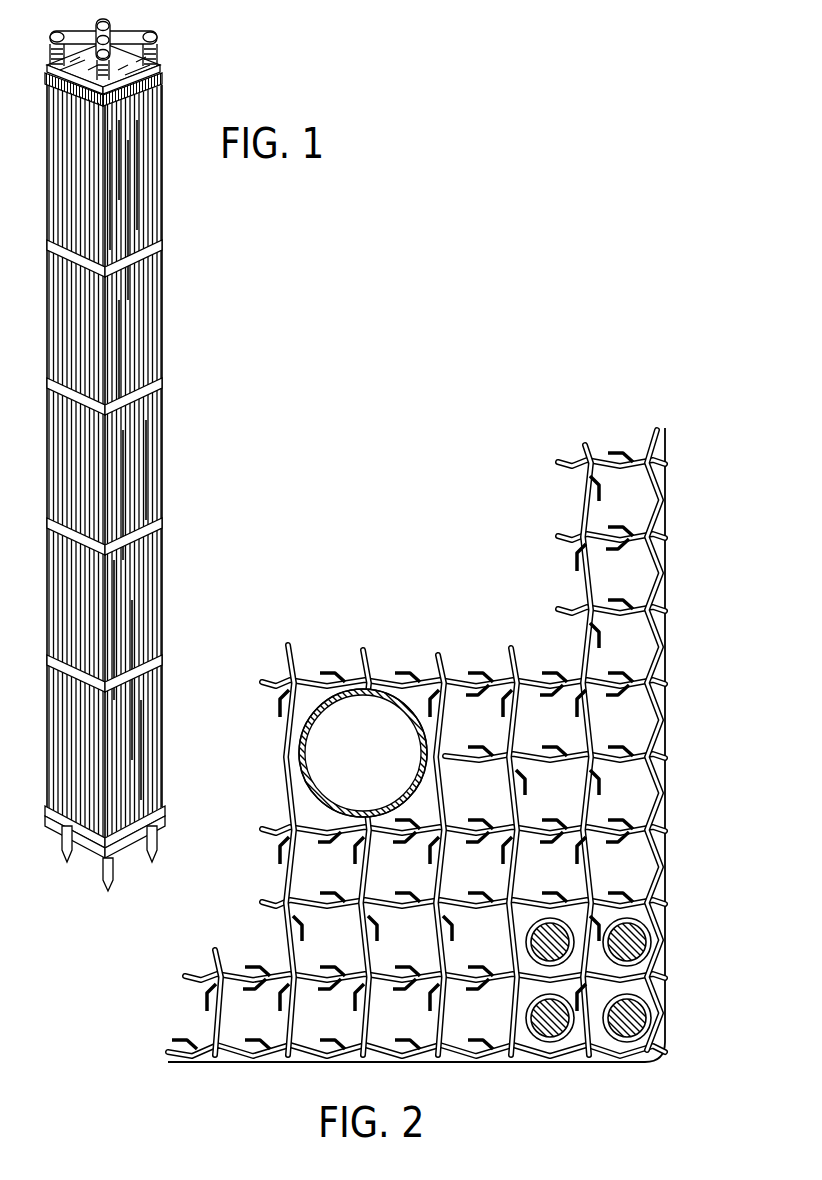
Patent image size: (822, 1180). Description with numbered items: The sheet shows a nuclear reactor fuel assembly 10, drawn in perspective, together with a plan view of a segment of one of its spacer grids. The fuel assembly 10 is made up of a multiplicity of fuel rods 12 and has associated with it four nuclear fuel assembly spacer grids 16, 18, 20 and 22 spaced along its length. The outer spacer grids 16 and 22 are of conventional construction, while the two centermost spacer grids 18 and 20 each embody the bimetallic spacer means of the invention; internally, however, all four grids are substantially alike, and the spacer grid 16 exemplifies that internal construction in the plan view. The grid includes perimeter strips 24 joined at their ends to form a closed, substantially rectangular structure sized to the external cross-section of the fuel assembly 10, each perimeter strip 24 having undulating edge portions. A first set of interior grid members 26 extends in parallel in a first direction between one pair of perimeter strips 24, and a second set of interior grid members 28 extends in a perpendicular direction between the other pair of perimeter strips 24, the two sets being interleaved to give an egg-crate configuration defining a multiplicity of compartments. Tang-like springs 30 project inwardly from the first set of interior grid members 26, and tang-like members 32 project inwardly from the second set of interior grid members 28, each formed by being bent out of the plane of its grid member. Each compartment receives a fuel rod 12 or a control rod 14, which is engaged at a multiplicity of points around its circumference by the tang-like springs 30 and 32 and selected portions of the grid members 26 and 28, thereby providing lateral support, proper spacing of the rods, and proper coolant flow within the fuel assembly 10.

In FIG. 1, the nuclear reactor fuel assembly 10 is at (163, 452).
In FIG. 1, the fuel rods 12 is at (162, 580).
In FIG. 2, the fuel rods 12 is at (640, 946).
In FIG. 2, the control rod 14 is at (303, 768).
In FIG. 1, the nuclear fuel assembly spacer grid 16 is at (163, 244).
In FIG. 2, the nuclear fuel assembly spacer grid 16 is at (667, 782).
In FIG. 1, the nuclear fuel assembly spacer grid 18 is at (163, 390).
In FIG. 1, the nuclear fuel assembly spacer grid 20 is at (165, 522).
In FIG. 1, the nuclear fuel assembly spacer grid 22 is at (165, 658).
In FIG. 2, the perimeter strips 24 is at (665, 660).
In FIG. 2, the interior grid members of a first set 26 is at (525, 804).
In FIG. 2, the interior grid members of a second set 28 is at (545, 680).
In FIG. 2, the tang-like springs 30 is at (505, 797).
In FIG. 2, the tang-like members 32 is at (490, 742).